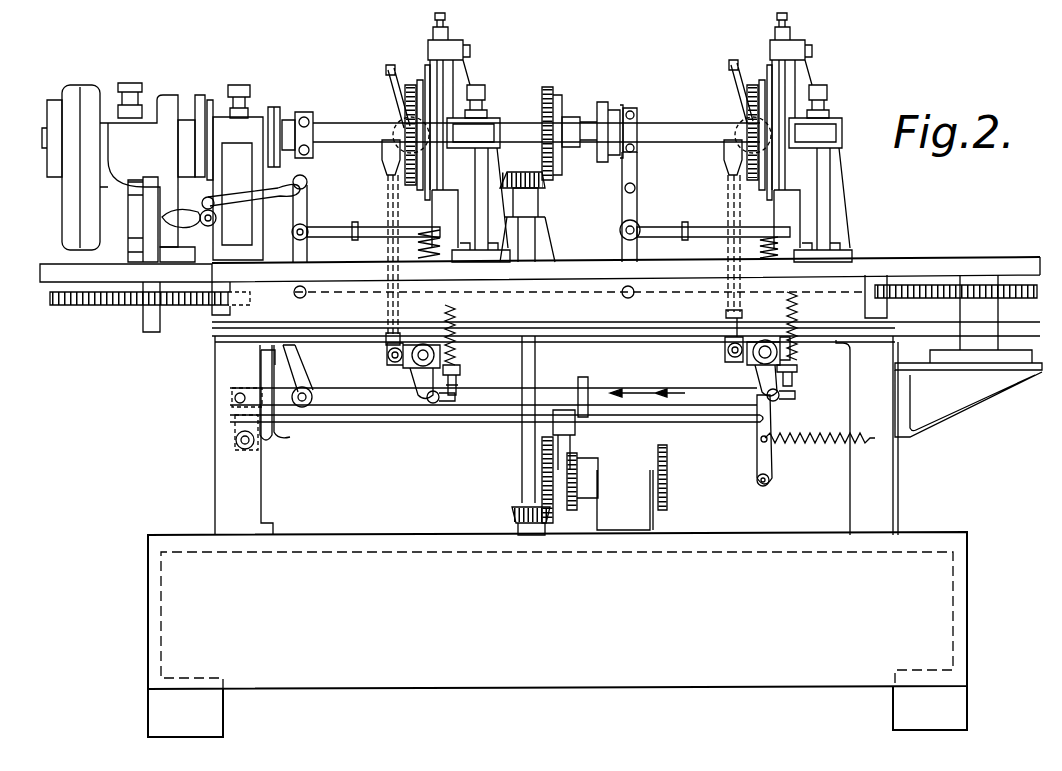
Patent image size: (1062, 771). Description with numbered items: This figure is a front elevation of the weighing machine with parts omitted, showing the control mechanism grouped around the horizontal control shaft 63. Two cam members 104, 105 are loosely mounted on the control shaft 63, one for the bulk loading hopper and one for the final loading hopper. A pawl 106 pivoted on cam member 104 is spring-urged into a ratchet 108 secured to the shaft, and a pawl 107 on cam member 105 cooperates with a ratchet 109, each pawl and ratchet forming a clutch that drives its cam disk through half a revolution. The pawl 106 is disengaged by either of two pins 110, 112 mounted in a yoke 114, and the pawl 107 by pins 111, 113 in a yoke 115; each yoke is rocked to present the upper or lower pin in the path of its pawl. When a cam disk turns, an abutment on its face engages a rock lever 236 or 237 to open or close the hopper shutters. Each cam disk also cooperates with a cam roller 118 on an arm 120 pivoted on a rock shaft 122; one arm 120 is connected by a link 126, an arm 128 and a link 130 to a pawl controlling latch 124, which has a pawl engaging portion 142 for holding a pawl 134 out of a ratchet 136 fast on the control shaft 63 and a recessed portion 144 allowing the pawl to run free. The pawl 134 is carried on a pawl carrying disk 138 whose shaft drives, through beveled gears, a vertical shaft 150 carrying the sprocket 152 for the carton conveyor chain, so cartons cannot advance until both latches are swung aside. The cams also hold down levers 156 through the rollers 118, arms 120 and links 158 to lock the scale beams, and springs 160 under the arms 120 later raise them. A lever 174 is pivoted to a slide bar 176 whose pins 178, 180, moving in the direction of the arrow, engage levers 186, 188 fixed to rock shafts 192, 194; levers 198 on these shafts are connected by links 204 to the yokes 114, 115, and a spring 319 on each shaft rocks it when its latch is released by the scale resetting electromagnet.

The control shaft 63 is at (660, 123).
The cam member 104 is at (760, 85).
The cam member 105 is at (418, 85).
The pawl 106 is at (764, 80).
The pawl 107 is at (422, 80).
The ratchet 108 is at (747, 102).
The ratchet 109 is at (405, 102).
The pin 110 is at (733, 63).
The pin 111 is at (390, 68).
The pin 112 is at (733, 176).
The pin 113 is at (388, 174).
The yoke 114 is at (745, 118).
The yoke 115 is at (400, 118).
The cam roller 118 is at (445, 187).
The arm 120 is at (355, 227).
The rock shaft 122 is at (305, 200).
The pawl controlling latch 124 is at (195, 228).
The link 126 is at (572, 296).
The arm 128 is at (310, 188).
The link 130 is at (231, 216).
The pawl 134 is at (242, 82).
The ratchet 136 is at (298, 110).
The pawl carrying disk 138 is at (203, 97).
The pawl engaging portion 142 is at (210, 176).
The recessed portion 144 is at (195, 187).
The vertical shaft 150 is at (140, 326).
The sprocket 152 is at (46, 306).
The lever 156 is at (700, 262).
The link 158 is at (360, 262).
The spring 160 is at (440, 250).
The lever 174 is at (302, 363).
The slide bar 176 is at (330, 412).
The pin 178 is at (437, 403).
The pin 180 is at (775, 412).
The lever 186 is at (420, 405).
The lever 188 is at (760, 426).
The rock shaft 192 is at (425, 348).
The rock shaft 194 is at (775, 343).
The lever 198 is at (400, 368).
The link 204 is at (398, 262).
The rock lever 236 is at (795, 36).
The rock lever 237 is at (453, 36).
The spring 319 is at (460, 362).